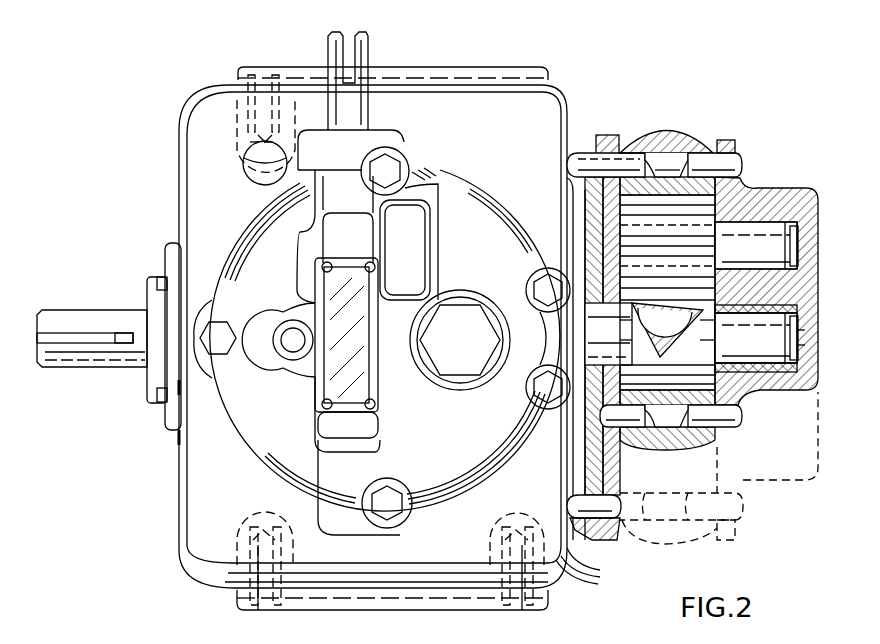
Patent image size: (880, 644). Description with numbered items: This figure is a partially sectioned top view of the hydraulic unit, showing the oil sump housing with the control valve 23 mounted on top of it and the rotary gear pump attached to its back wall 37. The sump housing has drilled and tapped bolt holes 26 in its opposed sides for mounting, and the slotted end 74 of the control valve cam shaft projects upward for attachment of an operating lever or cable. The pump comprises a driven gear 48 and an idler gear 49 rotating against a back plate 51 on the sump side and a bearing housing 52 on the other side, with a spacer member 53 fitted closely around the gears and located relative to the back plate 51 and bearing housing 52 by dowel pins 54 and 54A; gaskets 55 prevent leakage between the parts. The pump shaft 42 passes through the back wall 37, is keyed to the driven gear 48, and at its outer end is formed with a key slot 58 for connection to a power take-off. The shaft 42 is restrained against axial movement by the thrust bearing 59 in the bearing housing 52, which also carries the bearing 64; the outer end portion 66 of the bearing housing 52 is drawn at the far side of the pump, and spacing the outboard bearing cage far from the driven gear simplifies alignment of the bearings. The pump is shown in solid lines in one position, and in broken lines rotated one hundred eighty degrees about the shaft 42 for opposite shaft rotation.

The control valve 23 is at (455, 198).
The bolt holes 26 is at (278, 100).
The back wall 37 is at (598, 150).
The pump shaft 42 is at (756, 338).
The driven gear 48 is at (679, 438).
The idler gear 49 is at (663, 205).
The back plate 51 is at (626, 165).
The bearing housing 52 is at (756, 198).
The spacer member 53 is at (690, 143).
The dowel pin 54 is at (630, 165).
The dowel pin 54A is at (733, 165).
The gaskets 55 is at (618, 242).
The key slot 58 is at (126, 338).
The thrust bearing 59 is at (798, 372).
The bearing 64 is at (764, 374).
The end cap 66 is at (777, 207).
The slot 74 is at (352, 38).